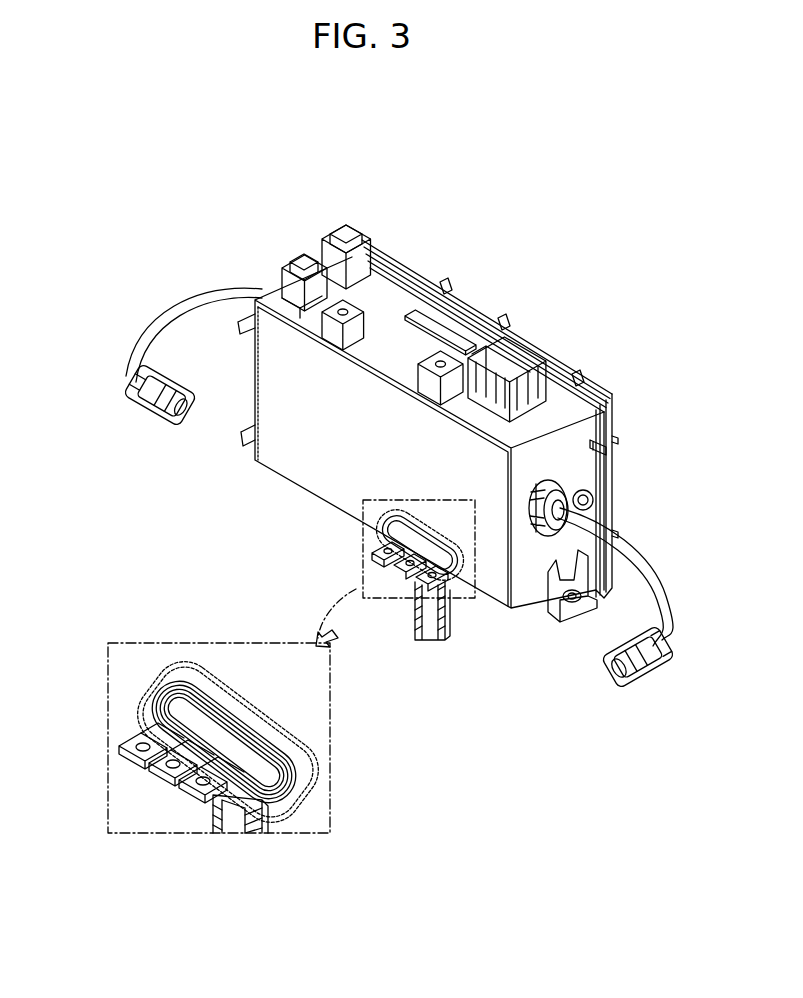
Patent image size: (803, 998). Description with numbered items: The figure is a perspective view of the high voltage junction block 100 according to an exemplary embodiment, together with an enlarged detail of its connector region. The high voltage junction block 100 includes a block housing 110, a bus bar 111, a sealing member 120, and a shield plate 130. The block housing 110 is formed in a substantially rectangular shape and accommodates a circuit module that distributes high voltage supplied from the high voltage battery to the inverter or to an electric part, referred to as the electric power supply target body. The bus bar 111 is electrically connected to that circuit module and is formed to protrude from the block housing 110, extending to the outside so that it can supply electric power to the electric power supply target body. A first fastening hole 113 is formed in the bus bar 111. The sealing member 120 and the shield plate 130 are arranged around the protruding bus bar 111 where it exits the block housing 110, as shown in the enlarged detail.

The high voltage junction block 100 is at (466, 275).
The block housing 110 is at (492, 596).
The sealing member 120 is at (173, 706).
The shield plate 130 is at (140, 690).
The first fastening hole 113 is at (136, 741).
The bus bar 111 is at (137, 762).